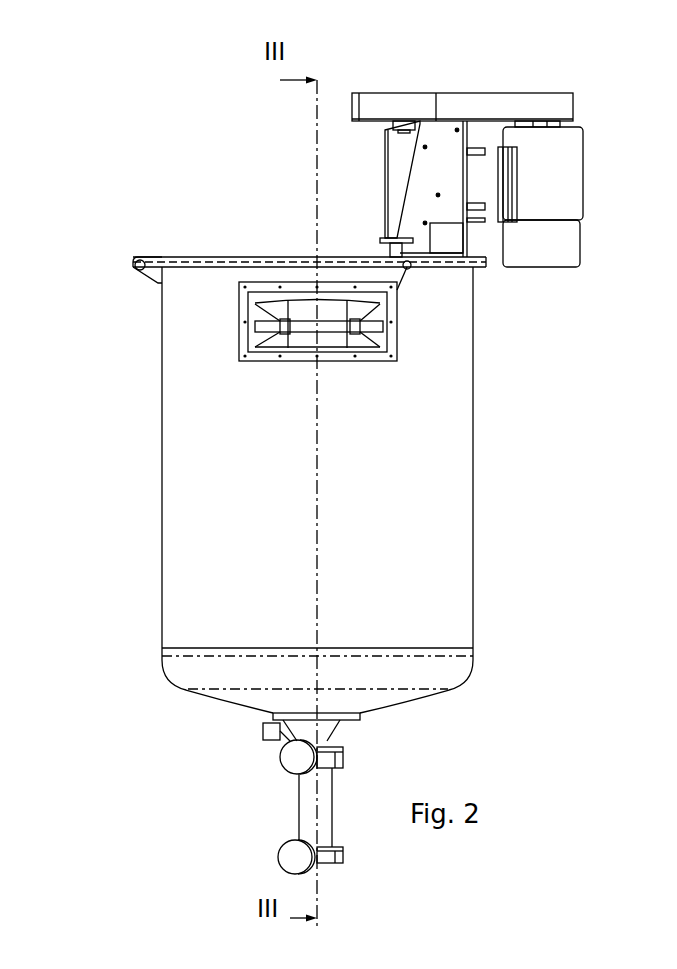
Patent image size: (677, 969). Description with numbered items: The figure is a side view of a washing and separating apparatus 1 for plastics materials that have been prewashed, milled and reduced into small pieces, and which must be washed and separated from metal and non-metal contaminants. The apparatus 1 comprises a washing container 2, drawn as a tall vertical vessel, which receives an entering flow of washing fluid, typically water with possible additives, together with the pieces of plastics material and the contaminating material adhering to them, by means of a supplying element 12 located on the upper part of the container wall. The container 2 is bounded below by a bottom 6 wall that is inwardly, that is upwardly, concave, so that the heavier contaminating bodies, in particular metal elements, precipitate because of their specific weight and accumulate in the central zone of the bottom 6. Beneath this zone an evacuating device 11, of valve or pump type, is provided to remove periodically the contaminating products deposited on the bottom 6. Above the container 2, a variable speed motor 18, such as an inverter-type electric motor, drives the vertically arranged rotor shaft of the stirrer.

The washing and separating apparatus 1 is at (121, 146).
The washing container 2 is at (175, 582).
The bottom wall 6 is at (222, 716).
The evacuating device 11 is at (244, 830).
The supplying element 12 is at (212, 356).
The variable speed motor 18 is at (530, 138).